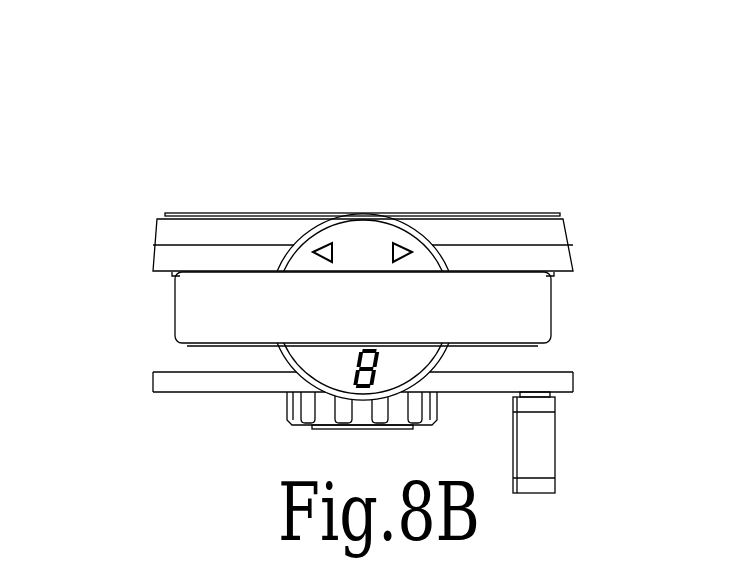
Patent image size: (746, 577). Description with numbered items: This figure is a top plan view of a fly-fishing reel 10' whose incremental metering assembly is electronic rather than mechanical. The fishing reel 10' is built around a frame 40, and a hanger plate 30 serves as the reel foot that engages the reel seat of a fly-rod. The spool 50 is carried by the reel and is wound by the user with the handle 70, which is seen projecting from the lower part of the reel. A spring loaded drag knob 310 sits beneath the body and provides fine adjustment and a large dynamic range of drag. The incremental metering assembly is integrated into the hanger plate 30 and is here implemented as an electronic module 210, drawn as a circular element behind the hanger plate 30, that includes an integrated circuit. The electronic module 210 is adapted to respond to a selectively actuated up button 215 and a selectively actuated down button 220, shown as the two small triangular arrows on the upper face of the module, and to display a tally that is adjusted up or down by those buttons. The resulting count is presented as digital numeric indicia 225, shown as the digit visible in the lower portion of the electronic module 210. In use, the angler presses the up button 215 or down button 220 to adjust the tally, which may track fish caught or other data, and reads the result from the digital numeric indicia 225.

The fishing reel 10' is at (364, 267).
The frame 40 is at (240, 233).
The hanger plate 30 is at (521, 308).
The spool 50 is at (168, 381).
The handle 70 is at (538, 450).
The spring loaded drag knob 310 is at (298, 425).
The electronic module 210 is at (416, 232).
The up button 215 is at (322, 247).
The down button 220 is at (396, 246).
The digital numeric indicia 225 is at (352, 365).